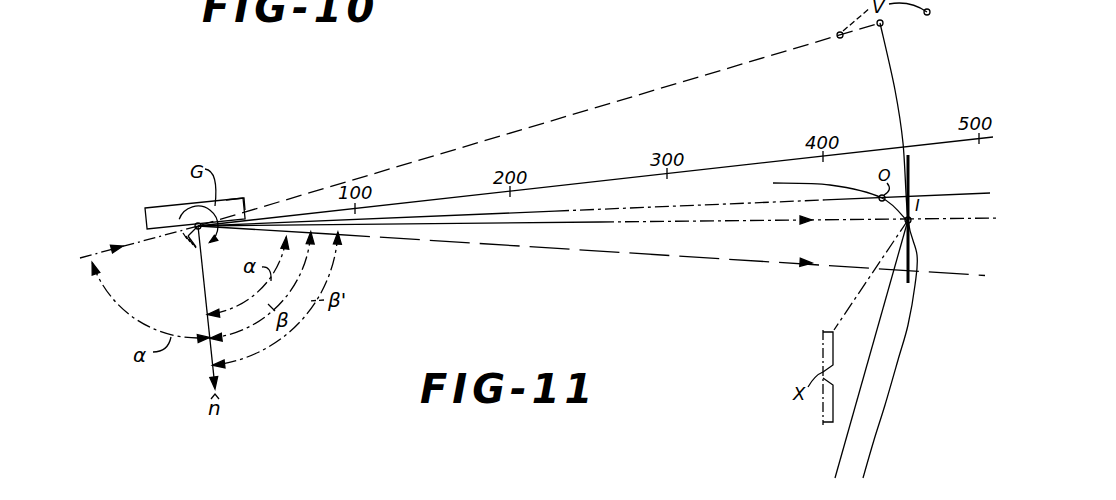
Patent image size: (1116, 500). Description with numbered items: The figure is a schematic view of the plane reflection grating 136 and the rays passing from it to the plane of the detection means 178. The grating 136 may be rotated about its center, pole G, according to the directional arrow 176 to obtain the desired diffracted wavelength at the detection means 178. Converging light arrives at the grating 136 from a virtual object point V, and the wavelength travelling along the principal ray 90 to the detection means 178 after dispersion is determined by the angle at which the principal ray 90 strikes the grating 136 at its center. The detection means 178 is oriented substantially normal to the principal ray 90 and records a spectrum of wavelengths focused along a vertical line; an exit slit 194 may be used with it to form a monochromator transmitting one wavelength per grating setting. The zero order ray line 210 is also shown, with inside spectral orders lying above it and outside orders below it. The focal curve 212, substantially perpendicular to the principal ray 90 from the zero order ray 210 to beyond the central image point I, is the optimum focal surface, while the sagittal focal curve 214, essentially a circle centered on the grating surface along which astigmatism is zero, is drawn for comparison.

The principal ray 90 is at (695, 224).
The grating 136 is at (233, 200).
The directional arrow 176 is at (184, 207).
The detection means 178 is at (912, 178).
The exit slit 194 is at (823, 347).
The zero order ray line 210 is at (748, 265).
The focal curve 212 is at (849, 452).
The sagittal focal curve 214 is at (881, 433).